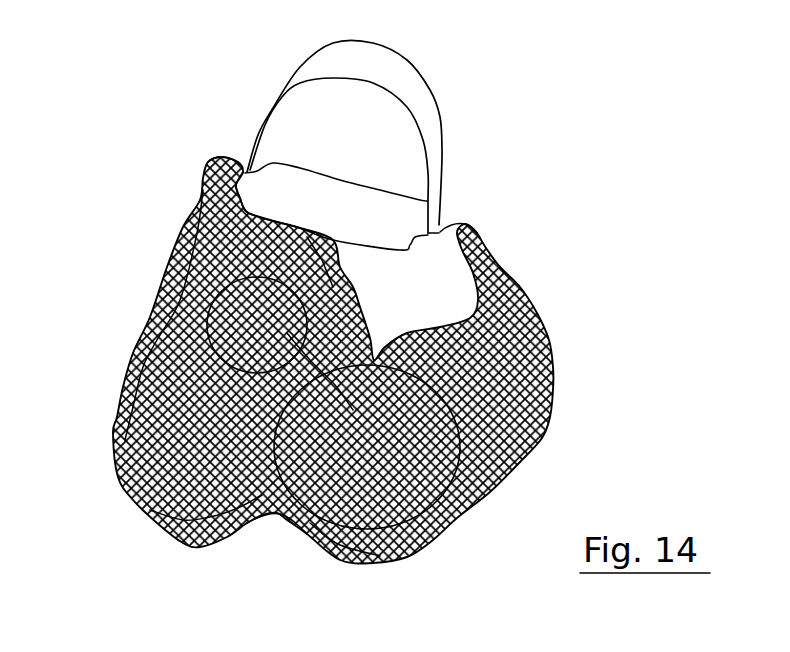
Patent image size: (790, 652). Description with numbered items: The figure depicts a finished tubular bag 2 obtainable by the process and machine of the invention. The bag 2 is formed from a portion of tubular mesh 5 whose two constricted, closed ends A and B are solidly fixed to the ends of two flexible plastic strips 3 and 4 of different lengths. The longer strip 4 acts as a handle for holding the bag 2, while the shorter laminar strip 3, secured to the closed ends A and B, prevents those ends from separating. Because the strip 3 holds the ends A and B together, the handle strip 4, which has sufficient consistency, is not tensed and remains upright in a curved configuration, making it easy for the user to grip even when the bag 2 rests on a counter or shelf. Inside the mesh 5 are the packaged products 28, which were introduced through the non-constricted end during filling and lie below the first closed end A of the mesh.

The tubular bag 2 is at (166, 262).
The plastic strip 3 is at (317, 183).
The plastic strip 4 is at (480, 72).
The tubular mesh 5 is at (280, 518).
The products 28 is at (423, 480).
The closed end A is at (229, 162).
The closed end B is at (442, 223).